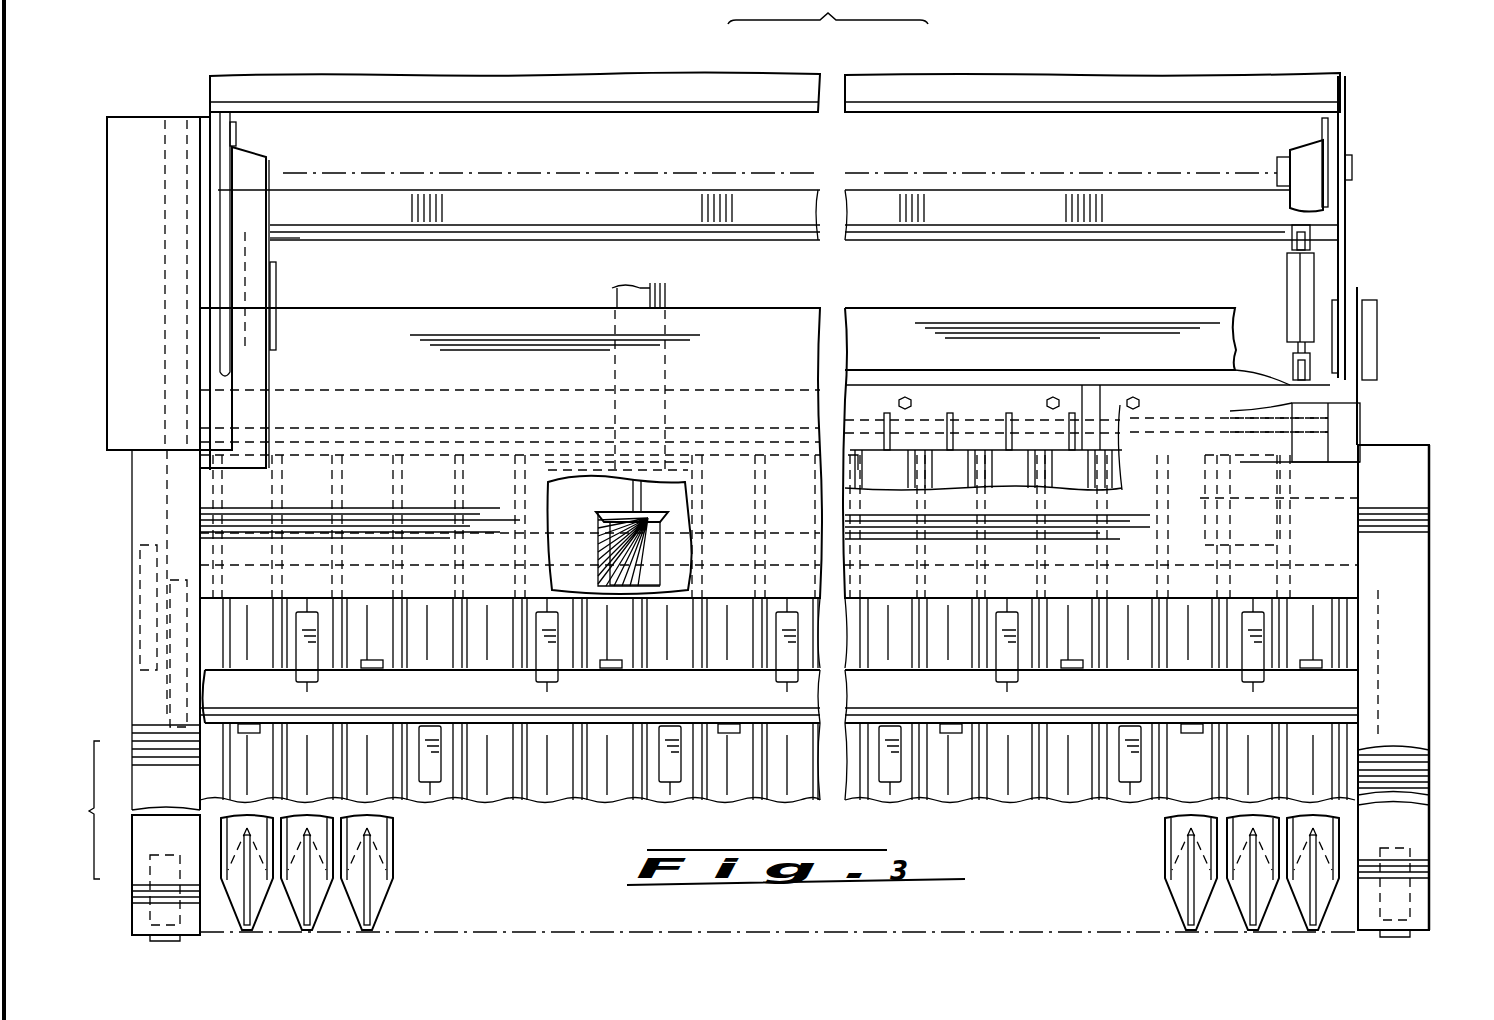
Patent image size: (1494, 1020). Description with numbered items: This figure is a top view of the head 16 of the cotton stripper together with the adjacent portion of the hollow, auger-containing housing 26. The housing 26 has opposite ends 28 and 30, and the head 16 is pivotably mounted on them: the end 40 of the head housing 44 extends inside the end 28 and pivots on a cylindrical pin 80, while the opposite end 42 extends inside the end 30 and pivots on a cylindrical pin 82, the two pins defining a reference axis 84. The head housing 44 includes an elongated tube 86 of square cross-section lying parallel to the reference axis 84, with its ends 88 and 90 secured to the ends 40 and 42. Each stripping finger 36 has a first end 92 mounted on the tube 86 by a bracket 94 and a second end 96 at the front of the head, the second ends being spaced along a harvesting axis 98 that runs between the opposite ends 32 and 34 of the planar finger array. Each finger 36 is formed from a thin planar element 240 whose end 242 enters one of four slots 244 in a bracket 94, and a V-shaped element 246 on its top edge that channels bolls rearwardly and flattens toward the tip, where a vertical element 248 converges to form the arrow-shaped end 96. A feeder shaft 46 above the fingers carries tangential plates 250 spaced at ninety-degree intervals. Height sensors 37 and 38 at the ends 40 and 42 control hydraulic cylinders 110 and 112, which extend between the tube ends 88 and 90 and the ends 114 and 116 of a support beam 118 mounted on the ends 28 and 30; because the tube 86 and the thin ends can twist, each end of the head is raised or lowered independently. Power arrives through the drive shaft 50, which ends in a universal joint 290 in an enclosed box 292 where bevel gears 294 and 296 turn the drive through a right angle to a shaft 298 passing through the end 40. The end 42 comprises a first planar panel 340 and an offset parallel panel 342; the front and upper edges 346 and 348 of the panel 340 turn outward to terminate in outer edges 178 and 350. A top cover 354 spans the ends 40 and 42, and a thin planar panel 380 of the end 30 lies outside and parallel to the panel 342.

The head 16 is at (1418, 607).
The auger-containing housing 26 is at (1336, 82).
The end of housing 28 is at (210, 118).
The end of housing 30 is at (1348, 146).
The end of finger array 32 is at (203, 932).
The end of finger array 34 is at (1358, 928).
The stripping fingers 36 is at (386, 845).
The height sensor 37 is at (150, 918).
The height sensor 38 is at (1428, 905).
The end of head housing 40 is at (238, 130).
The end of head housing 42 is at (1320, 130).
The head housing 44 is at (1320, 483).
The feeder shaft 46 is at (779, 696).
The drive shaft 50 is at (667, 288).
The cylindrical pin 80 is at (285, 160).
The cylindrical pin 82 is at (1280, 157).
The reference axis 84 is at (392, 175).
The elongated tube 86 is at (1176, 385).
The end of tube 88 is at (222, 410).
The end of tube 90 is at (1320, 393).
The first end of finger 92 is at (945, 470).
The bracket 94 is at (1118, 395).
The second end of finger 96 is at (1235, 908).
The harvesting axis 98 is at (427, 932).
The hydraulic cylinder 110 is at (277, 278).
The hydraulic cylinder 112 is at (1300, 278).
The end of support beam 114 is at (293, 240).
The end of support beam 116 is at (1285, 228).
The support beam 118 is at (463, 233).
The outer edge 178 is at (1428, 840).
The planar element 240 is at (946, 418).
The end of planar element 242 is at (887, 412).
The slot 244 is at (862, 440).
The V-shaped element 246 is at (1190, 806).
The vertically extending element 248 is at (1188, 878).
The plates 250 is at (547, 692).
The universal joint 290 is at (665, 462).
The box 292 is at (555, 462).
The bevel gear 294 is at (662, 512).
The bevel gear 296 is at (615, 576).
The shaft 298 is at (420, 548).
The first planar panel 340 is at (1358, 433).
The second planar panel 342 is at (1324, 140).
The front edge of panel 346 is at (1420, 782).
The upper edge of panel 348 is at (1410, 505).
The outer edge 350 is at (1430, 642).
The top cover 354 is at (1330, 572).
The planar panel 380 is at (1340, 242).